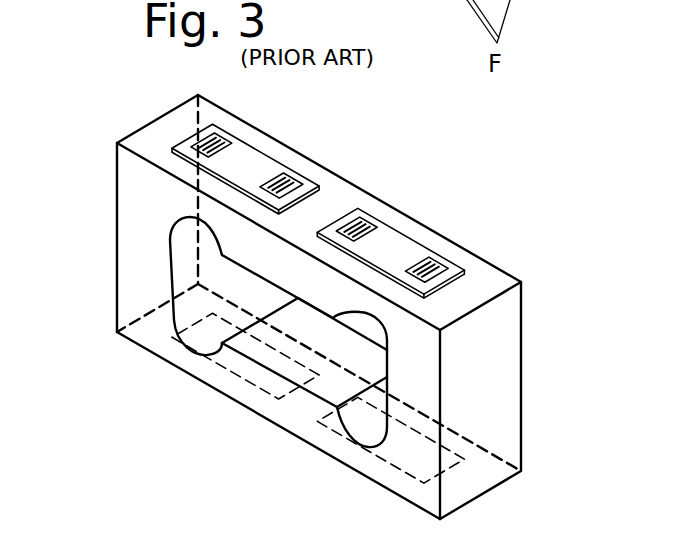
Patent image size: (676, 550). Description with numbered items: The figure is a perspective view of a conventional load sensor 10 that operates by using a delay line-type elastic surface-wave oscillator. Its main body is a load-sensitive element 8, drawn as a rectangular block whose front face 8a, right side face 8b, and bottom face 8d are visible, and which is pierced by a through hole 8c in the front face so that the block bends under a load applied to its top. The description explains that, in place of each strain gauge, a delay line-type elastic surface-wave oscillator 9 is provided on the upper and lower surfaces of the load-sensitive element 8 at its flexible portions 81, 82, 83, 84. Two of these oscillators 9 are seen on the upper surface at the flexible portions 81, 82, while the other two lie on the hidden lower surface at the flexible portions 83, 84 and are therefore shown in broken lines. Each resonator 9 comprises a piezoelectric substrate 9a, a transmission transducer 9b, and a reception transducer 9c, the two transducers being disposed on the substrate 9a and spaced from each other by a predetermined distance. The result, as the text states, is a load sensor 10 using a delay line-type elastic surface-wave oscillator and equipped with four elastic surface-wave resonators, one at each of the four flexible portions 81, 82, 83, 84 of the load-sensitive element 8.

The load sensor 10 is at (107, 133).
The load-sensitive element 8 is at (505, 273).
The front face of block 8a is at (132, 260).
The right side face of block 8b is at (502, 382).
The through hole 8c is at (268, 257).
The bottom face of block 8d is at (285, 412).
The flexible portion 81 is at (274, 150).
The flexible portion 82 is at (428, 233).
The flexible portion 83 is at (198, 365).
The flexible portion 84 is at (346, 448).
The delay line-type elastic surface-wave oscillator 9 is at (188, 130).
The piezoelectric substrate 9a is at (238, 158).
The transmission transducer 9b is at (288, 181).
The reception transducer 9c is at (218, 136).